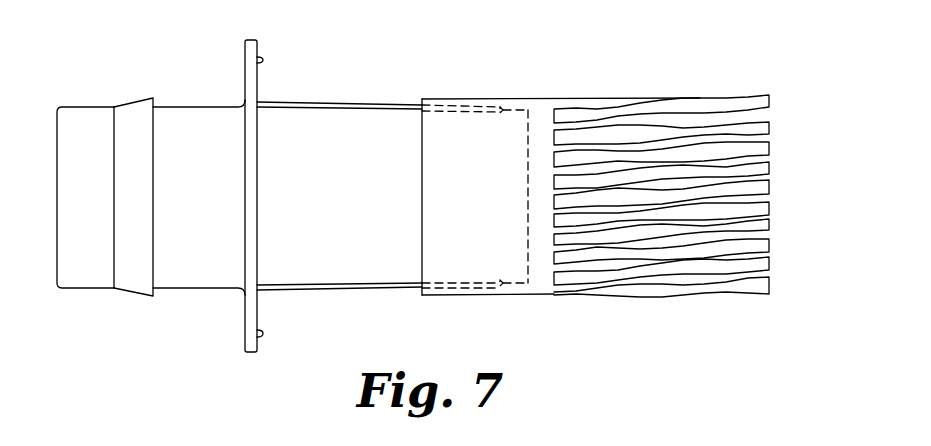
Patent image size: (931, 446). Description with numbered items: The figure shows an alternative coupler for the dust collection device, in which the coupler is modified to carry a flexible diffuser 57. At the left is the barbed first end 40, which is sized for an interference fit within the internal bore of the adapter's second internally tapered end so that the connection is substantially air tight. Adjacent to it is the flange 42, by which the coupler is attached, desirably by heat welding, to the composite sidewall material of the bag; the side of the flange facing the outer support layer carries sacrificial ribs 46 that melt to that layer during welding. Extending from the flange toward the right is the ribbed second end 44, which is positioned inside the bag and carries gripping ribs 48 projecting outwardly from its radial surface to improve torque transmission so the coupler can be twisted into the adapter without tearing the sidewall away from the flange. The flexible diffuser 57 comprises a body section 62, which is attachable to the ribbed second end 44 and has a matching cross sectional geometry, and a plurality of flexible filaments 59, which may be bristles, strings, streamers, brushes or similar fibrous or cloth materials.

The barbed first end 40 is at (132, 113).
The flange 42 is at (244, 51).
The ribbed second end 44 is at (504, 125).
The sacrificial ribs 46 is at (263, 59).
The gripping ribs 48 is at (383, 102).
The flexible diffuser 57 is at (542, 110).
The flexible filaments 59 is at (705, 105).
The body section 62 is at (504, 248).